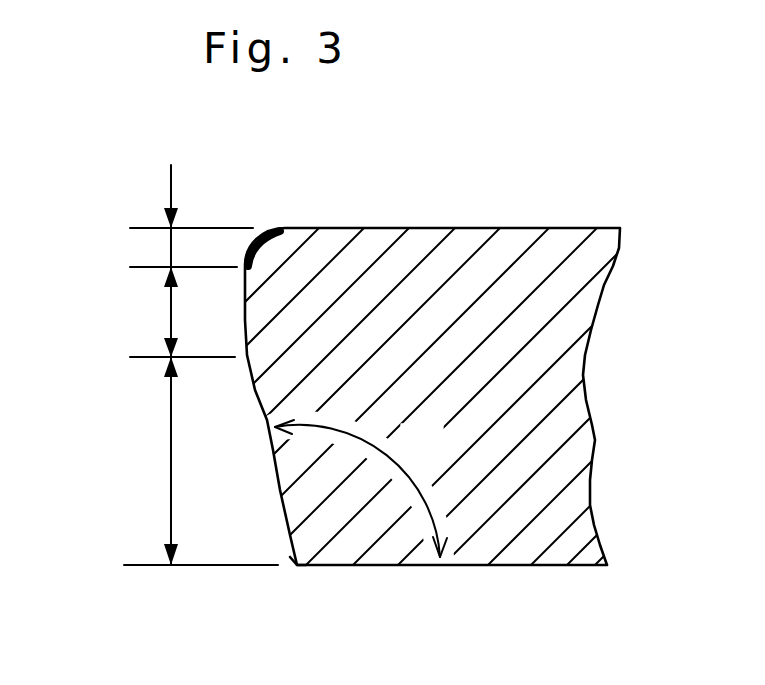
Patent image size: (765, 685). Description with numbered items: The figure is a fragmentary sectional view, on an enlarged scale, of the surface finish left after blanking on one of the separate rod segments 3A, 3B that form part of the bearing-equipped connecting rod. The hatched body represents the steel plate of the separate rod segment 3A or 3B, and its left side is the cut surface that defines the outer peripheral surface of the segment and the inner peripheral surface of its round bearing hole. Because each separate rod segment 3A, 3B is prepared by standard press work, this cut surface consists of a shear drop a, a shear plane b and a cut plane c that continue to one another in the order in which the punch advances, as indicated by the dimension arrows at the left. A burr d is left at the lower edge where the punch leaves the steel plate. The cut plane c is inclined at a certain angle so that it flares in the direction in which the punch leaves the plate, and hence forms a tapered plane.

The separate rod segment 3A is at (382, 359).
The separate rod segment 3B is at (448, 228).
The shear drop a is at (160, 242).
The shear plane b is at (158, 313).
The cut plane c is at (153, 458).
The burr d is at (303, 570).